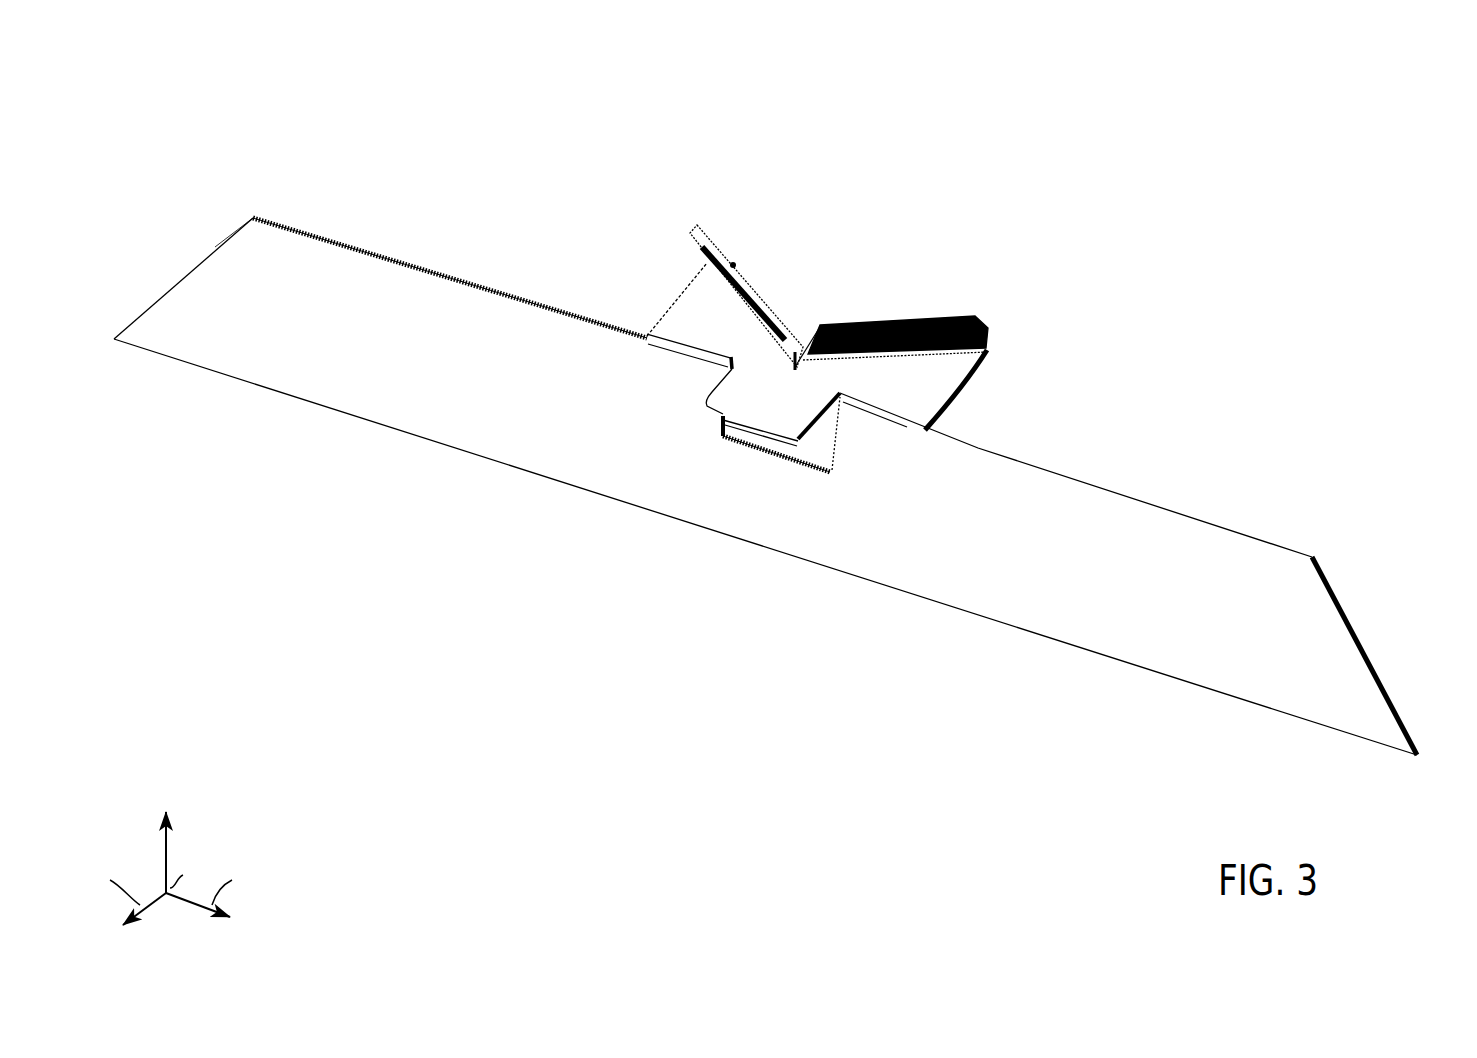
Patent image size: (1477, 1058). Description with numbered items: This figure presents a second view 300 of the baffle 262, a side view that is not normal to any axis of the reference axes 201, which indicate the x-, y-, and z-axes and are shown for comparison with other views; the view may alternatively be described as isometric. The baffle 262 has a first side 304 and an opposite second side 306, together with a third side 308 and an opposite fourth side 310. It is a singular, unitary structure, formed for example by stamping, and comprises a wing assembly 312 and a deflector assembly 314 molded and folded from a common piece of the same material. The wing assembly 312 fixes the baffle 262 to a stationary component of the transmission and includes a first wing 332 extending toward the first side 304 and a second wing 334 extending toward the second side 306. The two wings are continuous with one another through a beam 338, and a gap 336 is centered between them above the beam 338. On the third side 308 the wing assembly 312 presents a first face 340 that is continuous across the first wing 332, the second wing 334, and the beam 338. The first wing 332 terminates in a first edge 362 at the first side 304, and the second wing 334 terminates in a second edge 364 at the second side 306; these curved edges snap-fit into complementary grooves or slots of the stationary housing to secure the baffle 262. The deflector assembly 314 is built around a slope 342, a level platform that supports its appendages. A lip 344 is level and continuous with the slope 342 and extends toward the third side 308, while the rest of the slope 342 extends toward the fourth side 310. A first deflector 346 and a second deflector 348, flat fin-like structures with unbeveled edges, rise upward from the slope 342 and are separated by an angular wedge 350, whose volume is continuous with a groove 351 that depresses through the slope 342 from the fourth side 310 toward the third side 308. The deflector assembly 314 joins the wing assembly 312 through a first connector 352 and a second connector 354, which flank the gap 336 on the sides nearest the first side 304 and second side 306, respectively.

The reference axes 201 is at (165, 800).
The baffle 262 is at (1137, 247).
The second view 300 is at (230, 173).
The first side 304 is at (200, 232).
The second side 306 is at (1380, 650).
The third side 308 is at (517, 555).
The fourth side 310 is at (1033, 213).
The wing assembly 312 is at (687, 522).
The deflector assembly 314 is at (978, 385).
The first wing 332 is at (360, 267).
The second wing 334 is at (1232, 528).
The gap 336 is at (780, 453).
The beam 338 is at (740, 490).
The first face 340 is at (818, 520).
The slope 342 is at (687, 308).
The lip 344 is at (747, 402).
The first deflector 346 is at (706, 248).
The second deflector 348 is at (952, 317).
The wedge 350 is at (788, 342).
The groove 351 is at (812, 335).
The first connector 352 is at (687, 347).
The second connector 354 is at (870, 400).
The first edge 362 is at (215, 247).
The second edge 364 is at (1327, 573).